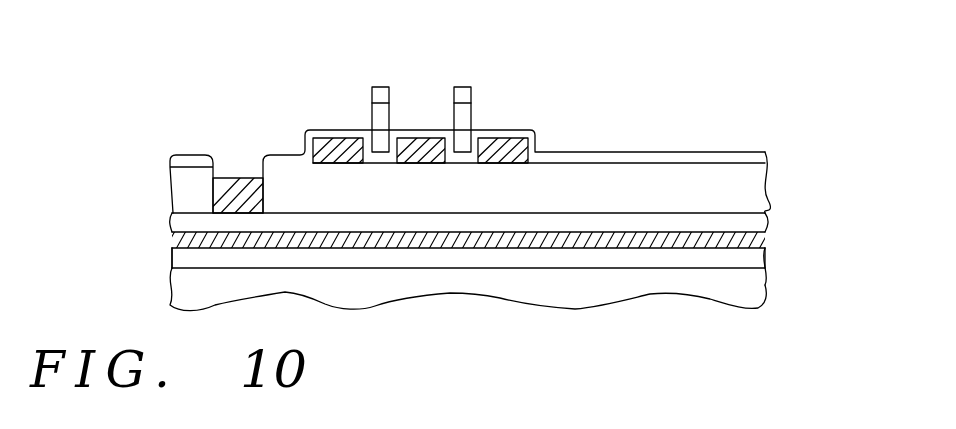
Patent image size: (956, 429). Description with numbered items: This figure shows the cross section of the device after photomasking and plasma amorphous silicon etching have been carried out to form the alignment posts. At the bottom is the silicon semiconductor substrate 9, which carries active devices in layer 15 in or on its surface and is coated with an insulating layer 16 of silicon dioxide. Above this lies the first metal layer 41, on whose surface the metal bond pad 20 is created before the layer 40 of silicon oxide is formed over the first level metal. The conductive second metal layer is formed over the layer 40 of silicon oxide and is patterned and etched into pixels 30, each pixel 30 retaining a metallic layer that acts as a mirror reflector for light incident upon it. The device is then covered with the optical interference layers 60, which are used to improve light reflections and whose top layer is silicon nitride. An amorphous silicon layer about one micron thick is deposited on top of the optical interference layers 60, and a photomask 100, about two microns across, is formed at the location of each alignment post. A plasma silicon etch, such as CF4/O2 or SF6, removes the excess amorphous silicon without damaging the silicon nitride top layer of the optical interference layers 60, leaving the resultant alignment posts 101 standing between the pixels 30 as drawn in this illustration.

The substrate 9 is at (757, 283).
The layer of active devices 15 is at (756, 258).
The insulating layer of silicon dioxide 16 is at (757, 240).
The first metal layer 41 is at (178, 221).
The layer of silicon oxide 40 is at (756, 191).
The metal bond pad 20 is at (218, 194).
The optical interference layers 60 is at (334, 137).
The pixel 30 is at (420, 153).
The photomask 100 is at (380, 97).
The alignment post 101 is at (463, 97).